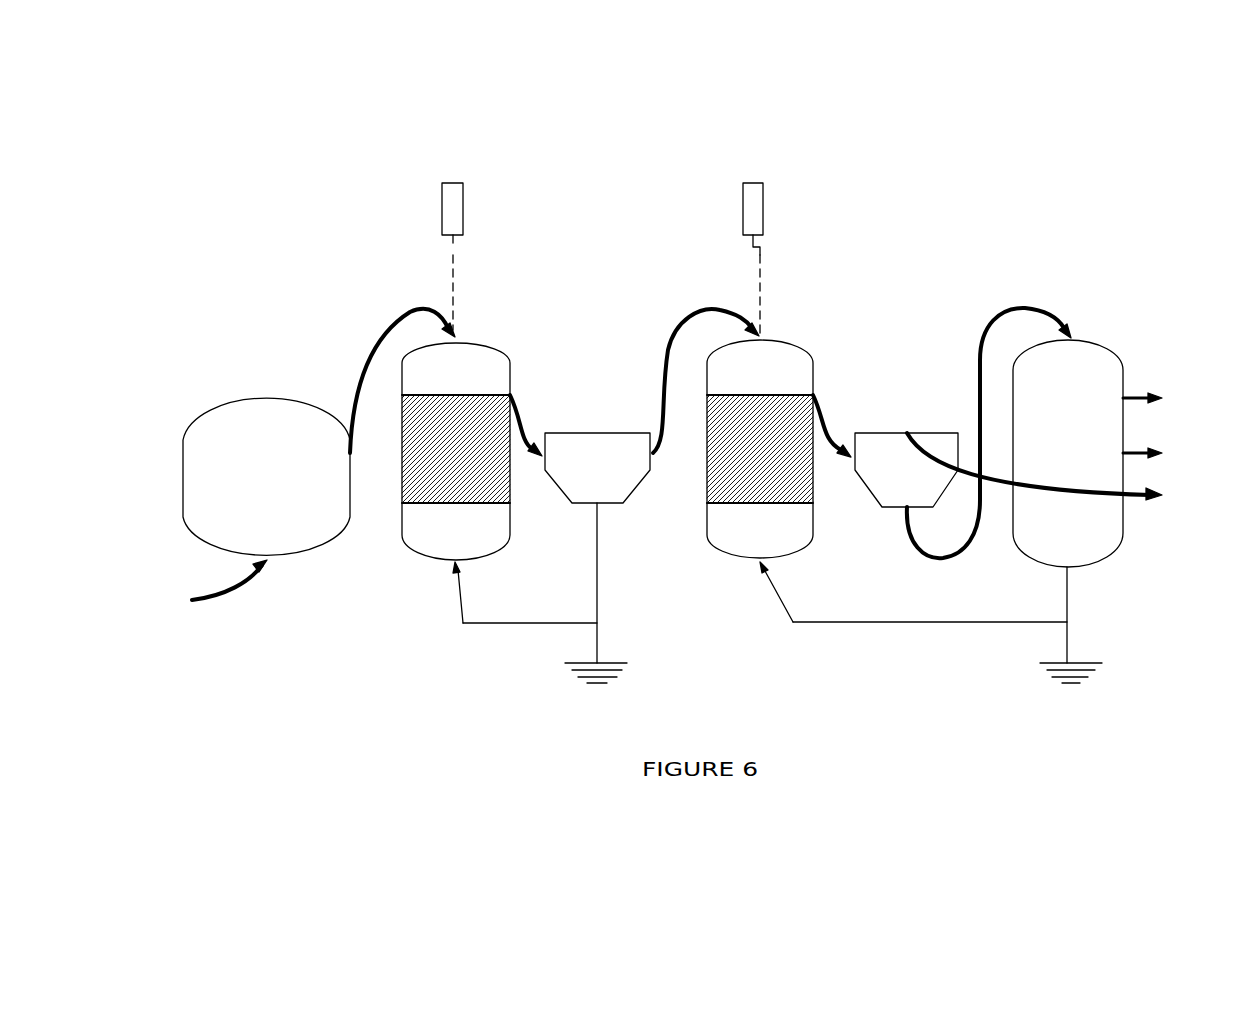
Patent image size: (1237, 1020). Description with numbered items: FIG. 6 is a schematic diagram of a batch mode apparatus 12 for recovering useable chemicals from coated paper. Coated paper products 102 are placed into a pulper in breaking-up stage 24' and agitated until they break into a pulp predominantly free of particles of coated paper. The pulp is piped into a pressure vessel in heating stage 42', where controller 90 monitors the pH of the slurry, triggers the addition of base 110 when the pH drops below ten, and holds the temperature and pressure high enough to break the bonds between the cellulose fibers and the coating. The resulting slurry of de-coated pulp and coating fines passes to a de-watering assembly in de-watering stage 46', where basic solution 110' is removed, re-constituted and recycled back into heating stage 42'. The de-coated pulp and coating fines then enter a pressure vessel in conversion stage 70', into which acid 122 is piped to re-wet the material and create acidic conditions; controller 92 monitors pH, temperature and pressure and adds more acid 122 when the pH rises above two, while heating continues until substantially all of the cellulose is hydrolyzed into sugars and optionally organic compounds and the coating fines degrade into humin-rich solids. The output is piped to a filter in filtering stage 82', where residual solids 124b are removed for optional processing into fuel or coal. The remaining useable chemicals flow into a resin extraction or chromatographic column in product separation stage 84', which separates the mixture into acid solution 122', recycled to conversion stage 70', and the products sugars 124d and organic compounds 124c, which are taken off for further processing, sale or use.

The catalyst regeneration system 12 is at (278, 130).
The breaking-up stage 24' is at (297, 495).
The coated paper products 102 is at (224, 596).
The controller 90 is at (463, 208).
The controller 92 is at (763, 208).
The base 110 is at (498, 423).
The heating stage 42' is at (546, 493).
The de-watering stage 46' is at (597, 515).
The basic solution 110' is at (525, 639).
The acid 122 is at (804, 422).
The conversion stage 70' is at (860, 492).
The filtering stage 82' is at (906, 423).
The product separation stage 84' is at (1062, 495).
The acid solution 122' is at (913, 639).
The residual solids 124b is at (1055, 481).
The organic compounds 124c is at (1162, 467).
The sugars 124d is at (1168, 408).